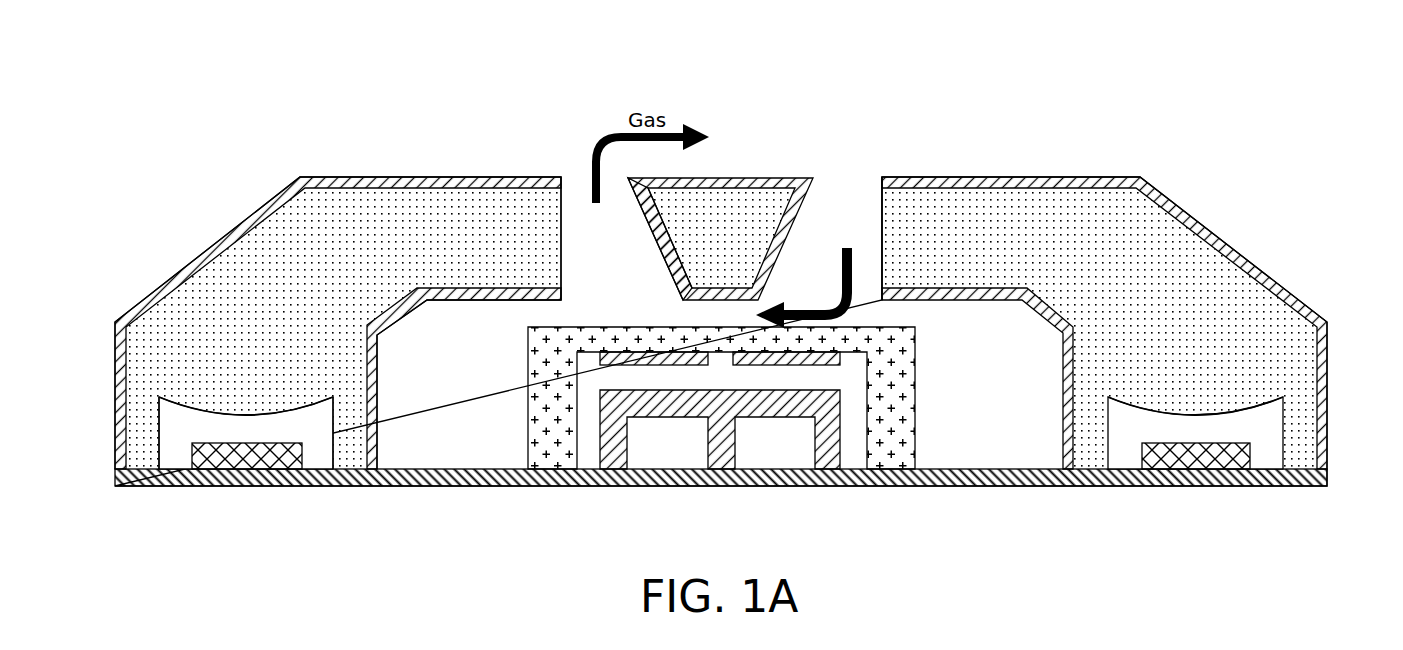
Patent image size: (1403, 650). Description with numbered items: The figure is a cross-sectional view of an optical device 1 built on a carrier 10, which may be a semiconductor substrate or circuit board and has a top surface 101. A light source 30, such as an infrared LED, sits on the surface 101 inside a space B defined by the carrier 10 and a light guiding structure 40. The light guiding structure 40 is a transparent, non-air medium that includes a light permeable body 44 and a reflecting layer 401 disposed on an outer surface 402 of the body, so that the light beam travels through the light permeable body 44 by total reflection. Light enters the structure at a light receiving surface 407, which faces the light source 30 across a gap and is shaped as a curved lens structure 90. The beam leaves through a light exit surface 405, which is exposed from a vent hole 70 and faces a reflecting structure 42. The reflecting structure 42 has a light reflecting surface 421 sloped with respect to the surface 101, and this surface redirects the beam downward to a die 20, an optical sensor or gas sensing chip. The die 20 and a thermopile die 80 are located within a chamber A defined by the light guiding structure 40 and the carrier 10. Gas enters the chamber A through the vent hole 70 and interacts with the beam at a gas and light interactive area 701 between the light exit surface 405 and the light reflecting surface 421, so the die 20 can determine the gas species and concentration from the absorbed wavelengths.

The optical device 1 is at (86, 71).
The carrier 10 is at (268, 487).
The die 20 is at (667, 360).
The light source 30 is at (1195, 460).
The light guiding structure 40 is at (1247, 360).
The reflecting layer 401 is at (1237, 250).
The outer surface 402 is at (1327, 418).
The light exit surface 405 is at (562, 200).
The light receiving surface 407 is at (197, 403).
The reflecting structure 42 is at (738, 207).
The light reflecting surface 421 is at (660, 248).
The light permeable body 44 is at (325, 215).
The vent hole 70 is at (847, 187).
The gas and light interactive area 701 is at (873, 165).
The die 80 is at (613, 450).
The lens structure 90 is at (247, 405).
The surface 101 is at (413, 468).
The chamber A is at (445, 333).
The space B is at (177, 452).